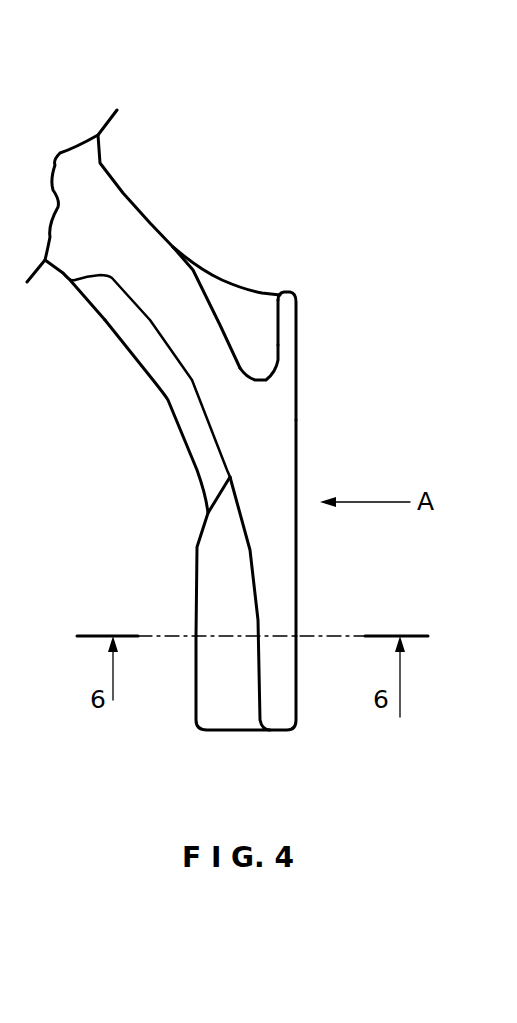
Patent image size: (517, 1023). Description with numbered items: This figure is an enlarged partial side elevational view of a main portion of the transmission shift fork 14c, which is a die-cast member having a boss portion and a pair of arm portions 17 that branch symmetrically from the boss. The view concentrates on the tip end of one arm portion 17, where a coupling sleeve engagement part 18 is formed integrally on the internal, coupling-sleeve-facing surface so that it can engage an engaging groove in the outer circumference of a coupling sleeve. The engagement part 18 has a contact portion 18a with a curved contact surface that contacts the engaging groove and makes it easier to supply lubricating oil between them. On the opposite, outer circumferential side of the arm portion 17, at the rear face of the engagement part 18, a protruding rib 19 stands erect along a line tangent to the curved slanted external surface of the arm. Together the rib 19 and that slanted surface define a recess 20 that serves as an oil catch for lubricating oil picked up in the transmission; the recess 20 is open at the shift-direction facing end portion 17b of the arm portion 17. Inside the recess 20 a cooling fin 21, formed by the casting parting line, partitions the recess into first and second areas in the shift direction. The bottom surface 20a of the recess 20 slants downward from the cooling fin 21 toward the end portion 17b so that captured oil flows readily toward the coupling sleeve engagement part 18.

The shift fork 14c is at (176, 174).
The arm portion 17 is at (123, 193).
The shift-direction facing end portion 17b is at (259, 432).
The coupling sleeve engagement part 18 is at (210, 688).
The contact portion 18a is at (197, 587).
The protruding rib 19 is at (300, 287).
The recess 20 is at (251, 342).
The bottom surface 20a is at (273, 360).
The cooling fin 21 is at (222, 273).